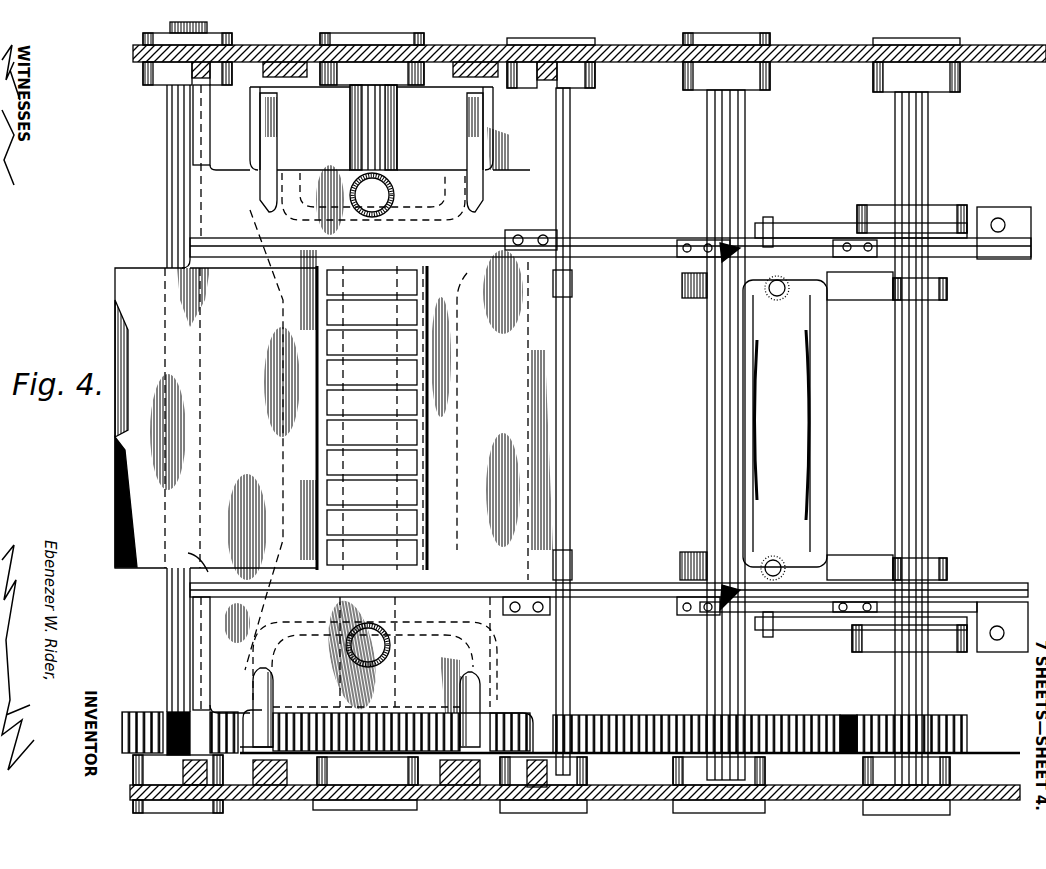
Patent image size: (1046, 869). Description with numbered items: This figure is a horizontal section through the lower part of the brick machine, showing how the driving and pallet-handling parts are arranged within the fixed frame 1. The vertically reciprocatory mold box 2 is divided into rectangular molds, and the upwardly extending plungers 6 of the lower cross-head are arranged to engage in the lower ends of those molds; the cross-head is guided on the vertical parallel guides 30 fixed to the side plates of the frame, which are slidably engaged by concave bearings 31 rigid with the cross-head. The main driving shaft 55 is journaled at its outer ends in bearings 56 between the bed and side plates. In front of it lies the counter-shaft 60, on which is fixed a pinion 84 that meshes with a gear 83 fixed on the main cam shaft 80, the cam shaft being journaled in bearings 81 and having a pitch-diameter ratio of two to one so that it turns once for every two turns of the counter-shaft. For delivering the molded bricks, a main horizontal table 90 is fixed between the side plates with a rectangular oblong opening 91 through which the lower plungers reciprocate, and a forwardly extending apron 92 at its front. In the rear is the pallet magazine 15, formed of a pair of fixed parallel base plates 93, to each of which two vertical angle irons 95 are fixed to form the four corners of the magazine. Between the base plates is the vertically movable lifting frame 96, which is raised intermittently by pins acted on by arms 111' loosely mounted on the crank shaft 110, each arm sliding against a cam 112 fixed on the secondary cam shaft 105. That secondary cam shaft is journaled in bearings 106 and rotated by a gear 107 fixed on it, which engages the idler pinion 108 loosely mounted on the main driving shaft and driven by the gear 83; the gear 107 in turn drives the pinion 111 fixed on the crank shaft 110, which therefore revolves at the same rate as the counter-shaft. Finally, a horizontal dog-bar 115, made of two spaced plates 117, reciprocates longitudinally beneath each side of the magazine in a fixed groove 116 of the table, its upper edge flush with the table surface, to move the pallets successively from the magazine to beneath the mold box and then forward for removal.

The fixed frame 1 is at (132, 62).
The mold box 2 is at (424, 424).
The plungers 6 is at (372, 417).
The pallet magazine 15 is at (810, 372).
The vertical parallel guides 30 is at (296, 85).
The concave bearings 31 is at (465, 138).
The main driving shaft 55 is at (571, 145).
The bearings 56 is at (580, 82).
The counter-shaft 60 is at (167, 141).
The main cam shaft 80 is at (394, 152).
The bearings 81 is at (357, 433).
The gear 83 is at (422, 720).
The pinion 84 is at (150, 714).
The main horizontal table 90 is at (492, 415).
The rectangular oblong opening 91 is at (317, 450).
The apron 92 is at (216, 424).
The base plates 93 is at (810, 498).
The vertical angle irons 95 is at (706, 240).
The lifting frame 96 is at (778, 298).
The secondary cam shaft 105 is at (745, 142).
The bearings 106 is at (762, 86).
The gear 107 is at (778, 722).
The idler pinion 108 is at (572, 716).
The crank shaft 110 is at (929, 447).
The pinion 111 is at (915, 724).
The arm 111' is at (861, 428).
The cam 112 is at (690, 298).
The dog-bar 115 is at (634, 262).
The fixed groove 116 is at (248, 245).
The plates 117 is at (187, 555).